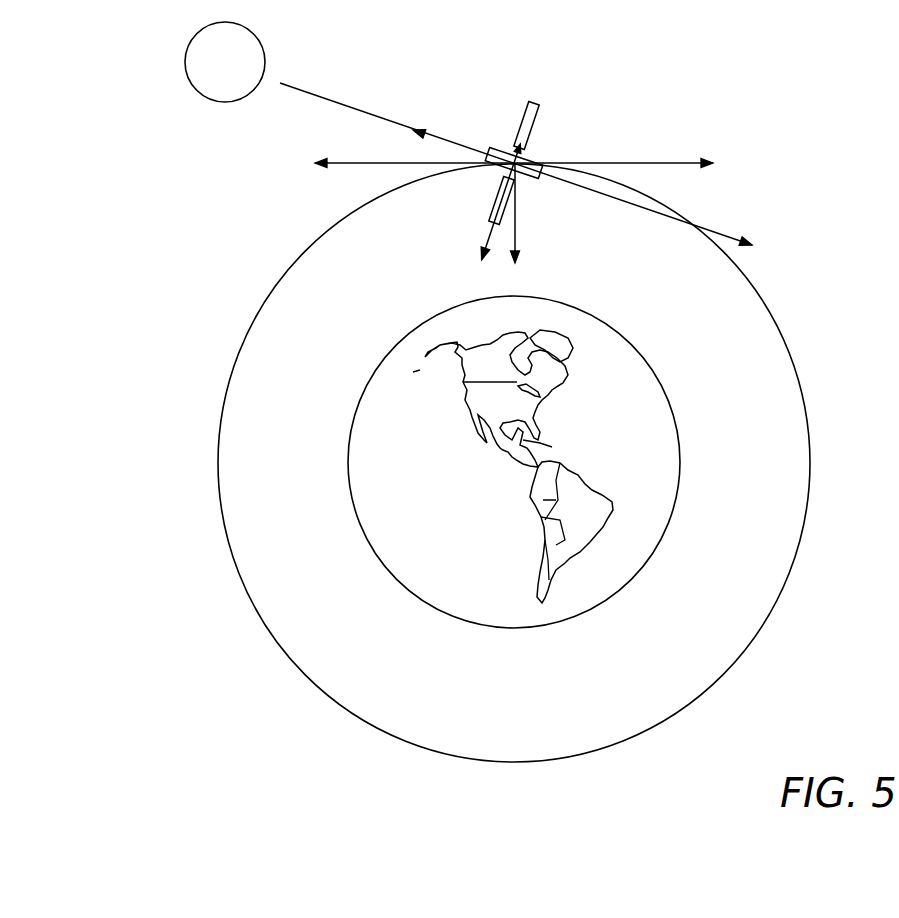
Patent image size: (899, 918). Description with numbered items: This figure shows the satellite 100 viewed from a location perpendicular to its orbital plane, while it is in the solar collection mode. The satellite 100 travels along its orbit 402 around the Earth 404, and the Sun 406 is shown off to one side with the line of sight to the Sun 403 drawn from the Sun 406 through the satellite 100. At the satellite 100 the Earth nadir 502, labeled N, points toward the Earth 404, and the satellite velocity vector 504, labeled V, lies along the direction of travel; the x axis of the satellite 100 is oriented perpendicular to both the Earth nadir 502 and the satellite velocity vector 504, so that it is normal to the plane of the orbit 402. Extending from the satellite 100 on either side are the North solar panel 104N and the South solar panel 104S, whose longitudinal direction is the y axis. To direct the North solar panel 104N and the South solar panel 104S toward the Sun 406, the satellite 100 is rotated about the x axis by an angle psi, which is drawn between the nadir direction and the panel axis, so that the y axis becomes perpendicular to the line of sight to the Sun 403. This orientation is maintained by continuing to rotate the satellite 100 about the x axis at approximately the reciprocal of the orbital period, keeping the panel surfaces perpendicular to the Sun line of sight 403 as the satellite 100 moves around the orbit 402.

The satellite 100 is at (510, 148).
The North solar panel 104N is at (537, 130).
The South solar panel 104S is at (493, 187).
The orbit 402 is at (809, 465).
The line of sight to the Sun 403 is at (308, 92).
The Earth 404 is at (660, 385).
The Sun 406 is at (185, 62).
The Earth nadir 502 is at (515, 213).
The satellite velocity vector 504 is at (613, 162).